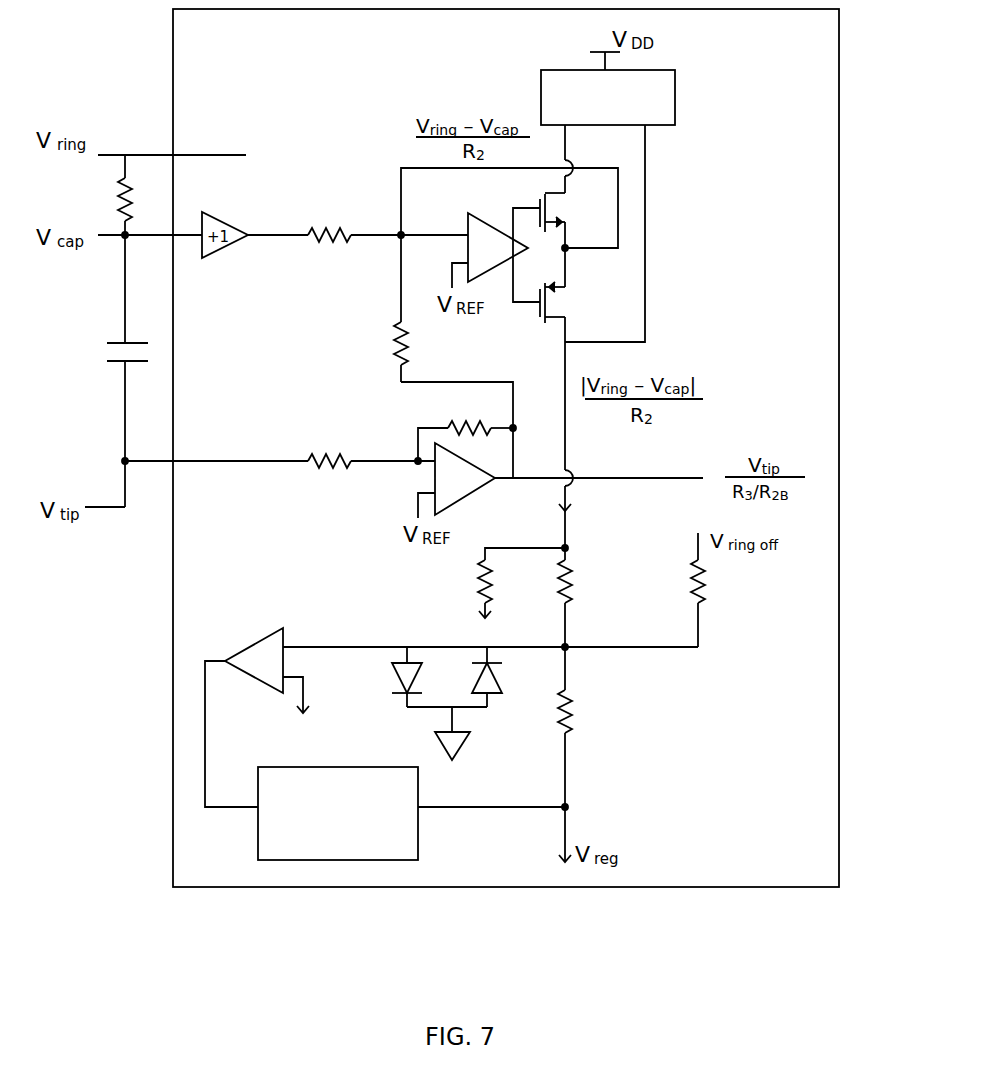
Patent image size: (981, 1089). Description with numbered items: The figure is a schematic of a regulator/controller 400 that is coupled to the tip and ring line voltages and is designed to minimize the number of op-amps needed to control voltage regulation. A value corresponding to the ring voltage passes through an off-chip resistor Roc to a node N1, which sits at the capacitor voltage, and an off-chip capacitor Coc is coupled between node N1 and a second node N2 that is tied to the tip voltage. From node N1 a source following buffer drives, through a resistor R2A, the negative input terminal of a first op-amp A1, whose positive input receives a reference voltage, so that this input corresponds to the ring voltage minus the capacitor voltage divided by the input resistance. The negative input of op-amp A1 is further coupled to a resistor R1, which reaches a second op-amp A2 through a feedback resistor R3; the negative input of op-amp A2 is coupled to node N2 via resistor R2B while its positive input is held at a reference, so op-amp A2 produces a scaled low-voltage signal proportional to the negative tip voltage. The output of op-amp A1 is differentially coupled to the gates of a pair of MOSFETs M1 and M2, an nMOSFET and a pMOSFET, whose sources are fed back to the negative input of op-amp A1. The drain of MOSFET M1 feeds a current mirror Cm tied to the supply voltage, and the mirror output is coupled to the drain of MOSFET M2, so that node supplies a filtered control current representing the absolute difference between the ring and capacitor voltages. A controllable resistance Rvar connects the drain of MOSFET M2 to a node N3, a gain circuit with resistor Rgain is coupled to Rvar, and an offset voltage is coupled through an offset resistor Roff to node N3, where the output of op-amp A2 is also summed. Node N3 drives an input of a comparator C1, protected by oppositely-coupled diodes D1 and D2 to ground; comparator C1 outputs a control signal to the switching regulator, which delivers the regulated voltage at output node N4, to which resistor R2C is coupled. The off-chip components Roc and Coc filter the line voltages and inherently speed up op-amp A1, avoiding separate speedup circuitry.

The controller 400 is at (893, 51).
The off-chip resistor Roc is at (100, 195).
The off-chip capacitor Coc is at (107, 360).
The node N1 is at (138, 244).
The second node N2 is at (110, 464).
The node N3 is at (578, 637).
The output node N4 is at (578, 802).
The resistor R2A is at (328, 219).
The resistor R2B is at (328, 444).
The resistor R2C is at (591, 727).
The resistor R1 is at (421, 308).
The feedback resistor R3 is at (465, 430).
The first op-amp A1 is at (498, 247).
The second op-amp A2 is at (465, 479).
The MOSFET M1 is at (566, 212).
The MOSFET M2 is at (566, 302).
The current mirror Cm is at (608, 97).
The resistor Rgain is at (482, 583).
The controllable resistance Rvar is at (601, 603).
The offset resistor Roff is at (724, 590).
The diode D1 is at (392, 677).
The diode D2 is at (505, 677).
The comparator C1 is at (267, 670).